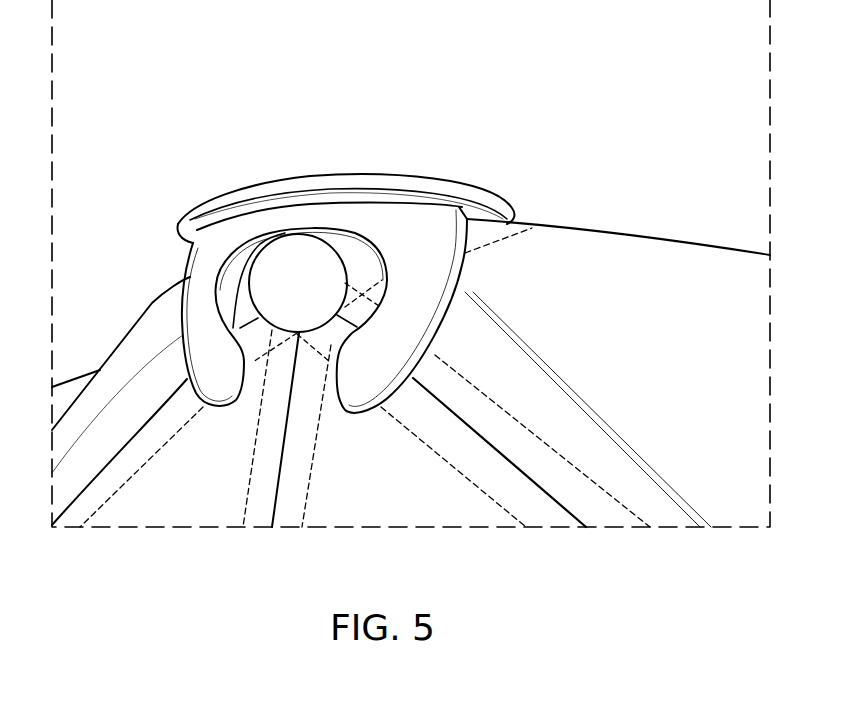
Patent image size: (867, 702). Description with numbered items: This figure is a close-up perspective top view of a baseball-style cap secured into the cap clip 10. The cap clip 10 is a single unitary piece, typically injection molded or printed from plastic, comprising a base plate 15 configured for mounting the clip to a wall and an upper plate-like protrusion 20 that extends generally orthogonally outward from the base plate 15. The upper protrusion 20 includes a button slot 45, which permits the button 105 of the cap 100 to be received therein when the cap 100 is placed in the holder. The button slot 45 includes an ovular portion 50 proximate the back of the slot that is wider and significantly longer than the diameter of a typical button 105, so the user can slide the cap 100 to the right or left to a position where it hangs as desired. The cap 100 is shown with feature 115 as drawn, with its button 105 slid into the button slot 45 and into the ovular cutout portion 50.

The cap clip 10 is at (235, 132).
The base plate 15 is at (462, 210).
The upper plate-like protrusion 20 is at (397, 218).
The button slot 45 is at (275, 400).
The ovular portion 50 is at (376, 257).
The cap 100 is at (653, 282).
The button 105 is at (287, 250).
The panel aperture edge 115 is at (562, 228).